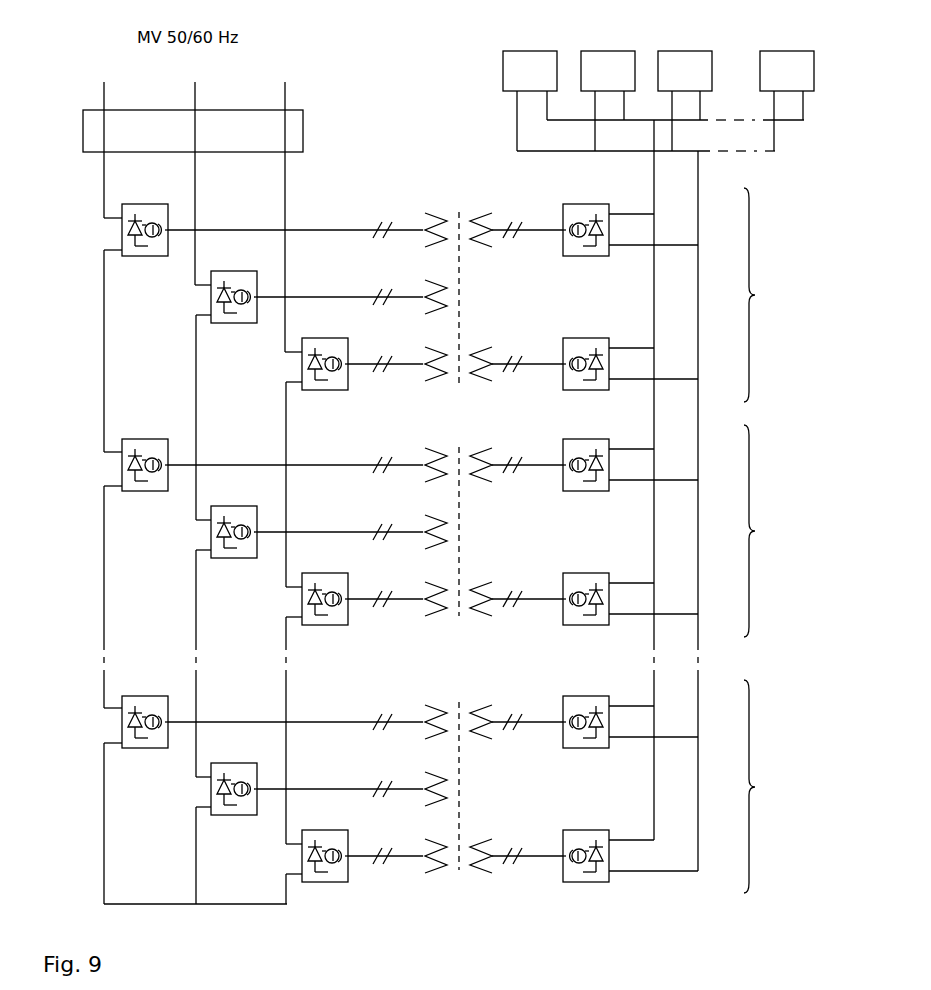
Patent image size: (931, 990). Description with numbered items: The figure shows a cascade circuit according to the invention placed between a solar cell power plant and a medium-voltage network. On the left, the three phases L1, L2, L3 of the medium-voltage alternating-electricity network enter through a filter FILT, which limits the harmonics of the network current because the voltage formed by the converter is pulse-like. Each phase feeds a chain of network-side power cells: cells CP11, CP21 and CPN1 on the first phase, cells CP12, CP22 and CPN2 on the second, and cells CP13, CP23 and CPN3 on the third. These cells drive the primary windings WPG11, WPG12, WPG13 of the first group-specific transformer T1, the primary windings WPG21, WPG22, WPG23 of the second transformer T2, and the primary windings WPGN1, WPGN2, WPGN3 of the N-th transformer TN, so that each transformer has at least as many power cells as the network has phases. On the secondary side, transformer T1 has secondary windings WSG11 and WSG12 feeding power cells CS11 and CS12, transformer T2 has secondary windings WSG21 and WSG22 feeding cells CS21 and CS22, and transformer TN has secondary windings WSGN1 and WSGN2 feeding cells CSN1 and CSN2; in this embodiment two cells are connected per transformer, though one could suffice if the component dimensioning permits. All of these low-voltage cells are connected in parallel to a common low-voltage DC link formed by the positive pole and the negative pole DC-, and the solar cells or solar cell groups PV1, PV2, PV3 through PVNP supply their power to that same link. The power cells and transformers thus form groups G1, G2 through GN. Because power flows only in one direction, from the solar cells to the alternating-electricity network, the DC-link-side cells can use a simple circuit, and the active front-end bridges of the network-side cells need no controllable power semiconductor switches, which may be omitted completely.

The filter FILT is at (193, 131).
The phase line L1 is at (195, 492).
The phase line L2 is at (208, 492).
The phase line L3 is at (298, 492).
The power cell CP11 is at (145, 220).
The power cell CP12 is at (234, 287).
The power cell CP13 is at (325, 354).
The power cell CP21 is at (145, 455).
The power cell CP22 is at (234, 522).
The power cell CP23 is at (325, 589).
The power cell CPN1 is at (145, 712).
The power cell CPN2 is at (234, 779).
The power cell CPN3 is at (325, 846).
The primary winding WPG11 is at (307, 224).
The primary winding WPG12 is at (352, 291).
The primary winding WPG13 is at (397, 358).
The primary winding WPG21 is at (307, 459).
The primary winding WPG22 is at (352, 526).
The primary winding WPG23 is at (397, 593).
The primary winding WPGN1 is at (307, 716).
The primary winding WPGN2 is at (352, 783).
The primary winding WPGN3 is at (397, 850).
The secondary winding WSG11 is at (516, 224).
The secondary winding WSG12 is at (516, 358).
The secondary winding WSG21 is at (516, 459).
The secondary winding WSG22 is at (516, 593).
The secondary winding WSGN1 is at (516, 716).
The secondary winding WSGN2 is at (516, 850).
The transformer T1 is at (454, 282).
The transformer T2 is at (454, 518).
The transformer TN is at (455, 773).
The power cell CS11 is at (630, 220).
The power cell CS12 is at (630, 354).
The power cell CS21 is at (630, 455).
The power cell CS22 is at (630, 589).
The power cell CSN1 is at (630, 712).
The power cell CSN2 is at (630, 846).
The negative pole of DC link DC- is at (667, 510).
The solar cell group PV1 is at (530, 101).
The solar cell group PV2 is at (608, 101).
The solar cell group PV3 is at (685, 101).
The solar cell group PVNP is at (787, 101).
The group G1 is at (768, 295).
The group G2 is at (768, 531).
The group GN is at (769, 786).